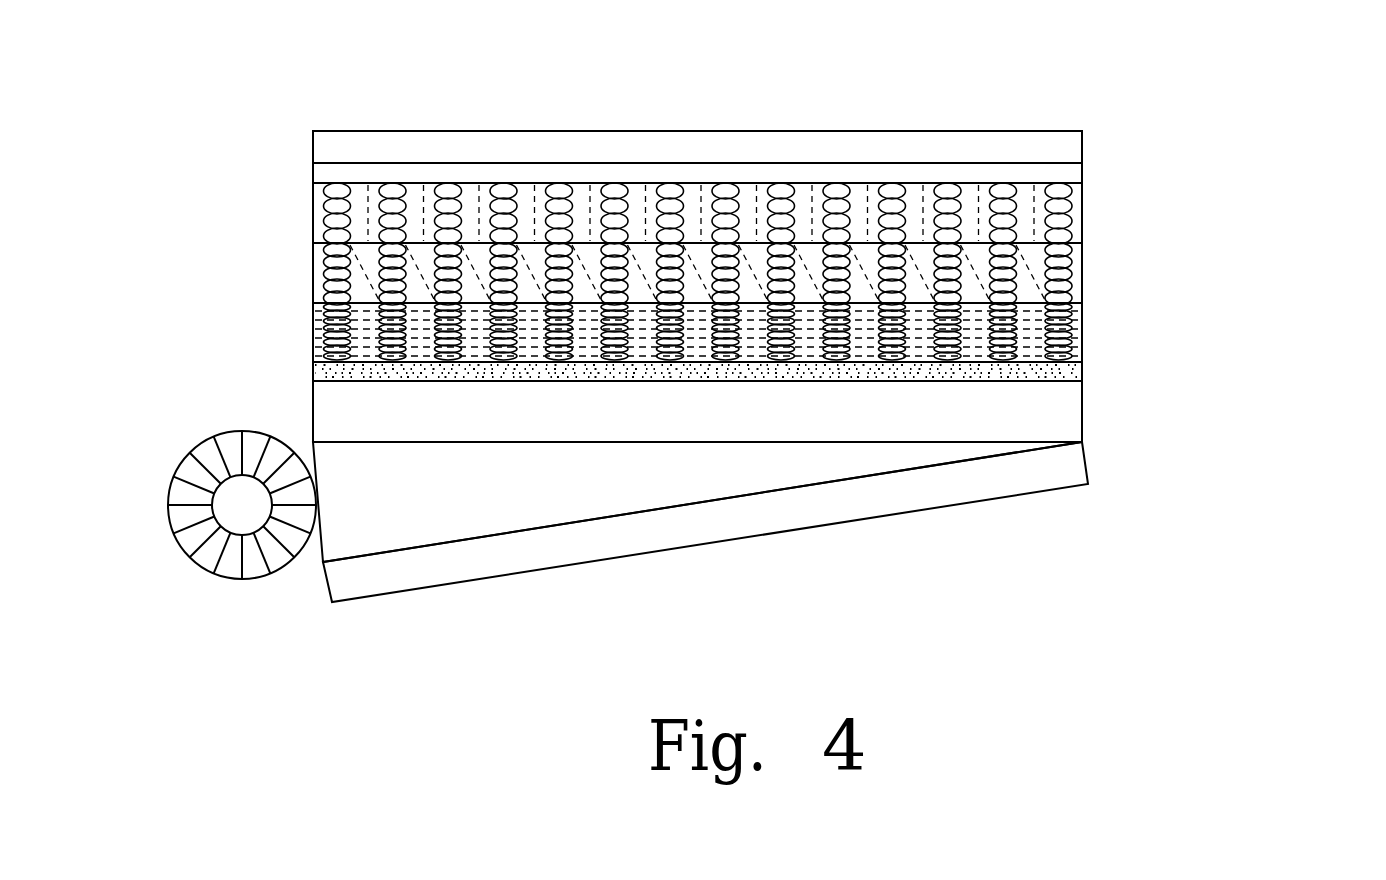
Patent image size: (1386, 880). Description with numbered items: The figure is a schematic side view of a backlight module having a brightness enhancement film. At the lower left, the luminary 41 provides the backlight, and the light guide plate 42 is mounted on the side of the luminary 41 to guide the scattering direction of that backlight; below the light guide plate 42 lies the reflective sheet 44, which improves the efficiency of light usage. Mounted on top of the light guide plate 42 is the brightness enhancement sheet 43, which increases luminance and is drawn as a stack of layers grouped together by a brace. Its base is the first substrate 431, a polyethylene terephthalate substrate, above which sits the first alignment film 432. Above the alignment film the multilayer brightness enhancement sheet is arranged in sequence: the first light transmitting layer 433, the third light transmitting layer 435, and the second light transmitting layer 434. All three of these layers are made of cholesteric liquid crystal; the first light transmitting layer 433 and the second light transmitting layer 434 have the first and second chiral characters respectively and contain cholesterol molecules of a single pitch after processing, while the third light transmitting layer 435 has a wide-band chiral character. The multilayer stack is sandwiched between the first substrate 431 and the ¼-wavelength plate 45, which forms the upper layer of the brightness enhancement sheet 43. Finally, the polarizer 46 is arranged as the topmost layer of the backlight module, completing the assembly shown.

The luminary 41 is at (187, 491).
The light guide plate 42 is at (376, 472).
The brightness enhancement sheet 43 is at (844, 314).
The first substrate 431 is at (807, 413).
The first alignment film 432 is at (1060, 370).
The first light transmitting layer 433 is at (1060, 330).
The second light transmitting layer 434 is at (1060, 223).
The third light transmitting layer 435 is at (1060, 272).
The reflective sheet 44 is at (1060, 471).
The ¼-wavelength plate 45 is at (1058, 172).
The polarizer 46 is at (1060, 148).